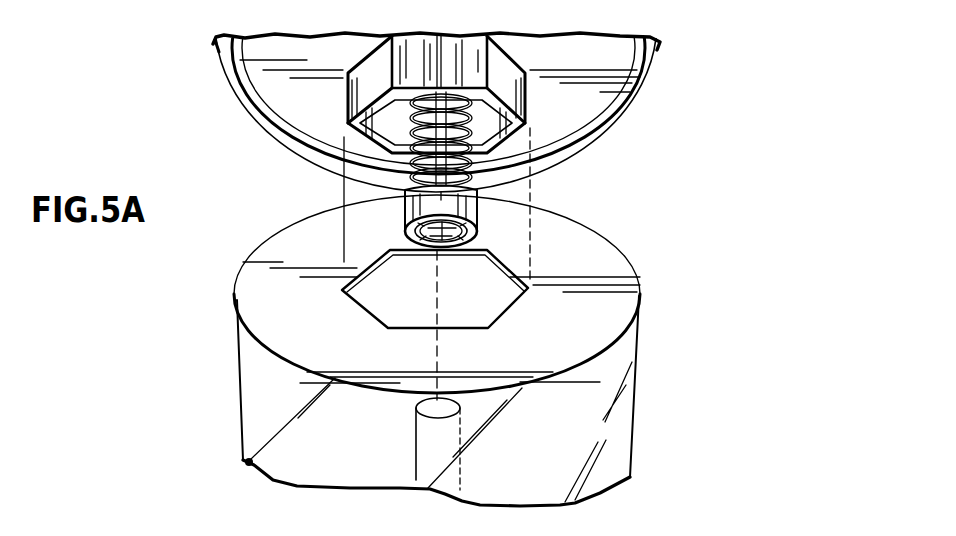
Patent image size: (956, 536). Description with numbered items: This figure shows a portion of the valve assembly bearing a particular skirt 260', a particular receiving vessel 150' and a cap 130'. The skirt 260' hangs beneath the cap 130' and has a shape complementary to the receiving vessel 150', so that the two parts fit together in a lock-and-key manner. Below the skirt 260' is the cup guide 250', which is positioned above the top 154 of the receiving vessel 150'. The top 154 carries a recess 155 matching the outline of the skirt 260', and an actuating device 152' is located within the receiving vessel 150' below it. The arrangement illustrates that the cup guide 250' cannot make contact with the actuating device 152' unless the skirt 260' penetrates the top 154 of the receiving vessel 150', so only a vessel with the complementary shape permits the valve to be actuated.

The cap 130' is at (466, 141).
The skirt 260' is at (465, 94).
The cup guide 250' is at (464, 218).
The top 154 is at (582, 238).
The hexagonal recess 155 is at (397, 300).
The actuating device 152' is at (402, 444).
The receiving vessel 150' is at (469, 401).